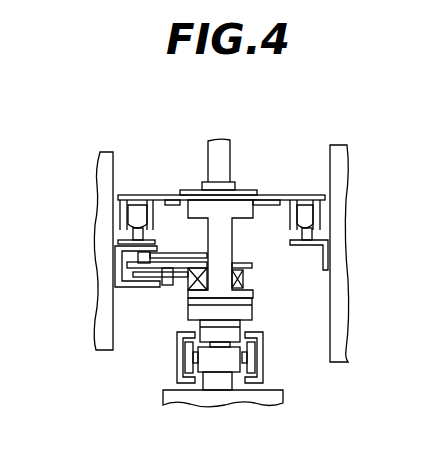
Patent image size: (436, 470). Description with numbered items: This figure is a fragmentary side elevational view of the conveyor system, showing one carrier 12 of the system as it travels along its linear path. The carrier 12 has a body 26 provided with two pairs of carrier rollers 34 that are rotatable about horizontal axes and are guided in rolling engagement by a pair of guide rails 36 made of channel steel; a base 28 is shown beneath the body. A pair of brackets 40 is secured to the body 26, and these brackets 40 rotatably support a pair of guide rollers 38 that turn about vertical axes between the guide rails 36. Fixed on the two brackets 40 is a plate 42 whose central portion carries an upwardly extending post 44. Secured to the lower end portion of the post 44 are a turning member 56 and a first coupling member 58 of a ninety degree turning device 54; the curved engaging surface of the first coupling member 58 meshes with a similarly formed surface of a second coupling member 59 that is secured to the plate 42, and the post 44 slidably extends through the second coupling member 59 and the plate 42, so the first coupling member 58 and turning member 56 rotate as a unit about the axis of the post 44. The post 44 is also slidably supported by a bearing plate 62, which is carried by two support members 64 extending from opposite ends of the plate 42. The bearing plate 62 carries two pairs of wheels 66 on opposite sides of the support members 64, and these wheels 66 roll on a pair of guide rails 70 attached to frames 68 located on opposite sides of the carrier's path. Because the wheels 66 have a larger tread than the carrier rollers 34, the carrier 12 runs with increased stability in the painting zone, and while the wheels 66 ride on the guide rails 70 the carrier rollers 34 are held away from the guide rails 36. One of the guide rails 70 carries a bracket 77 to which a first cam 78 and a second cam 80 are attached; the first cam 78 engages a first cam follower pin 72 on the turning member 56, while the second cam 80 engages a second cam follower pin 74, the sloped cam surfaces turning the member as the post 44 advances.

The carrier 12 is at (270, 143).
The body 26 is at (218, 362).
The base 28 is at (263, 402).
The carrier rollers 34 is at (188, 367).
The guide rails 36 is at (175, 362).
The guide rollers 38 is at (237, 330).
The brackets 40 is at (247, 312).
The plate 42 is at (248, 302).
The post 44 is at (228, 155).
The 90° turning device 54 is at (100, 248).
The turning member 56 is at (193, 278).
The first coupling member 58 is at (233, 270).
The second coupling member 59 is at (240, 280).
The bearing plate 62 is at (173, 200).
The support members 64 is at (228, 238).
The wheels 66 is at (135, 217).
The frames 68 is at (100, 268).
The guide rails 70 is at (118, 240).
The pin 72 is at (167, 287).
The pin 74 is at (162, 198).
The bracket 77 is at (118, 280).
The first cam 78 is at (155, 288).
The second cam 80 is at (175, 255).